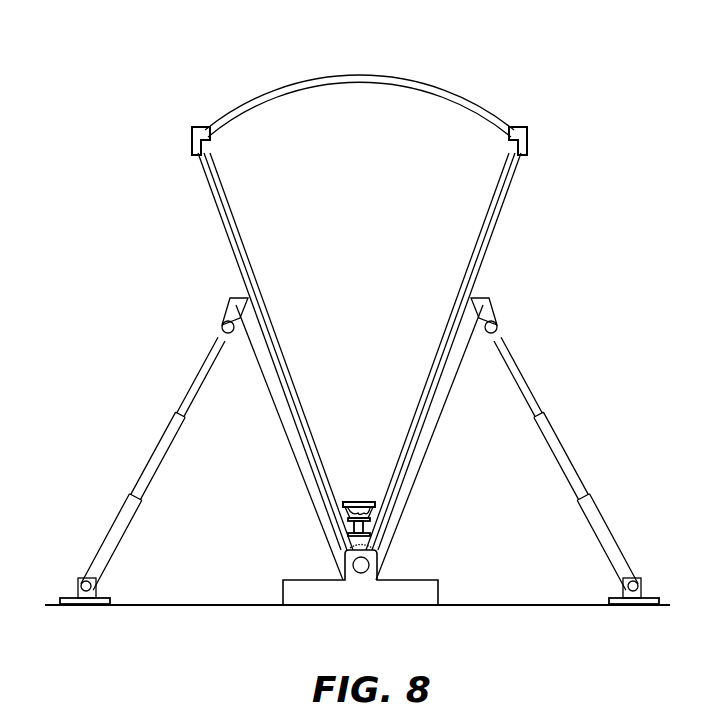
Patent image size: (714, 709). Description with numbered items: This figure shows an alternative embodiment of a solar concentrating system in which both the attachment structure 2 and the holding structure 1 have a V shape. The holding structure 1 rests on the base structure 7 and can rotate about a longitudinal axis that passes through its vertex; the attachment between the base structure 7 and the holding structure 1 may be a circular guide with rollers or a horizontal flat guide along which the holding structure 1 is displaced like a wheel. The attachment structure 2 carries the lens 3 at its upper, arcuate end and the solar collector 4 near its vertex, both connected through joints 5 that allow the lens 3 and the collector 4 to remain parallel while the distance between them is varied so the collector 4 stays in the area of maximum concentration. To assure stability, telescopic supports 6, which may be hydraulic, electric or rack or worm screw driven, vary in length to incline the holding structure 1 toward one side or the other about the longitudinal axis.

The holding structure 1 is at (438, 417).
The attachment structure 2 is at (506, 213).
The lens 3 is at (407, 78).
The solar collector 4 is at (333, 512).
The joints 5 is at (196, 128).
The telescopic supports 6 is at (527, 377).
The base structure 7 is at (432, 597).